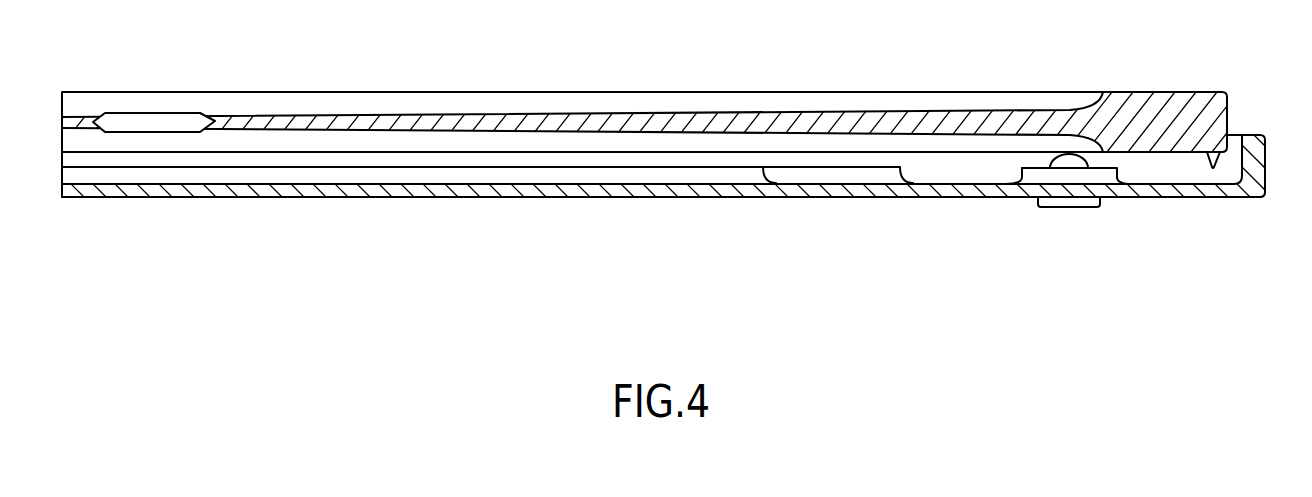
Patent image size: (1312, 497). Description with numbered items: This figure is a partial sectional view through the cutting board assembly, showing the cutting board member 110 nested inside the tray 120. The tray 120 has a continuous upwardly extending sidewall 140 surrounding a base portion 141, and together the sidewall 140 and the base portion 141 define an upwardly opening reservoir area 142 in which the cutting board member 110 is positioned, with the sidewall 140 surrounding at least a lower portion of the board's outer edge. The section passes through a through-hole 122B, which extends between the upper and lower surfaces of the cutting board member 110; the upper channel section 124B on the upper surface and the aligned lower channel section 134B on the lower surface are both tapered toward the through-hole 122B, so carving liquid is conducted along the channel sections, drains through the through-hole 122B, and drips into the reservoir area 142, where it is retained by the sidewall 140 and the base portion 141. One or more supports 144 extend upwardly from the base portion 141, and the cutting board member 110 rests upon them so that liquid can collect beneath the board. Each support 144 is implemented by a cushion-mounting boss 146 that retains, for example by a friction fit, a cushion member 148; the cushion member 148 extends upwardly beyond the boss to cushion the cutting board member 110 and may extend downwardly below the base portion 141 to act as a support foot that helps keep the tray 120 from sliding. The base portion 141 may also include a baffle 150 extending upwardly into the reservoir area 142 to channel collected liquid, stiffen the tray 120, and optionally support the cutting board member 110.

The cutting board member 110 is at (1182, 90).
The tray 120 is at (378, 198).
The through-hole 122B is at (170, 123).
The upper channel section 124B is at (737, 102).
The lower channel section 134B is at (472, 137).
The sidewall 140 is at (1268, 167).
The base portion 141 is at (1213, 198).
The reservoir area 142 is at (932, 170).
The support 144 is at (999, 183).
The cushion-mounting boss 146 is at (1142, 177).
The cushion member 148 is at (1066, 208).
The baffle 150 is at (532, 163).